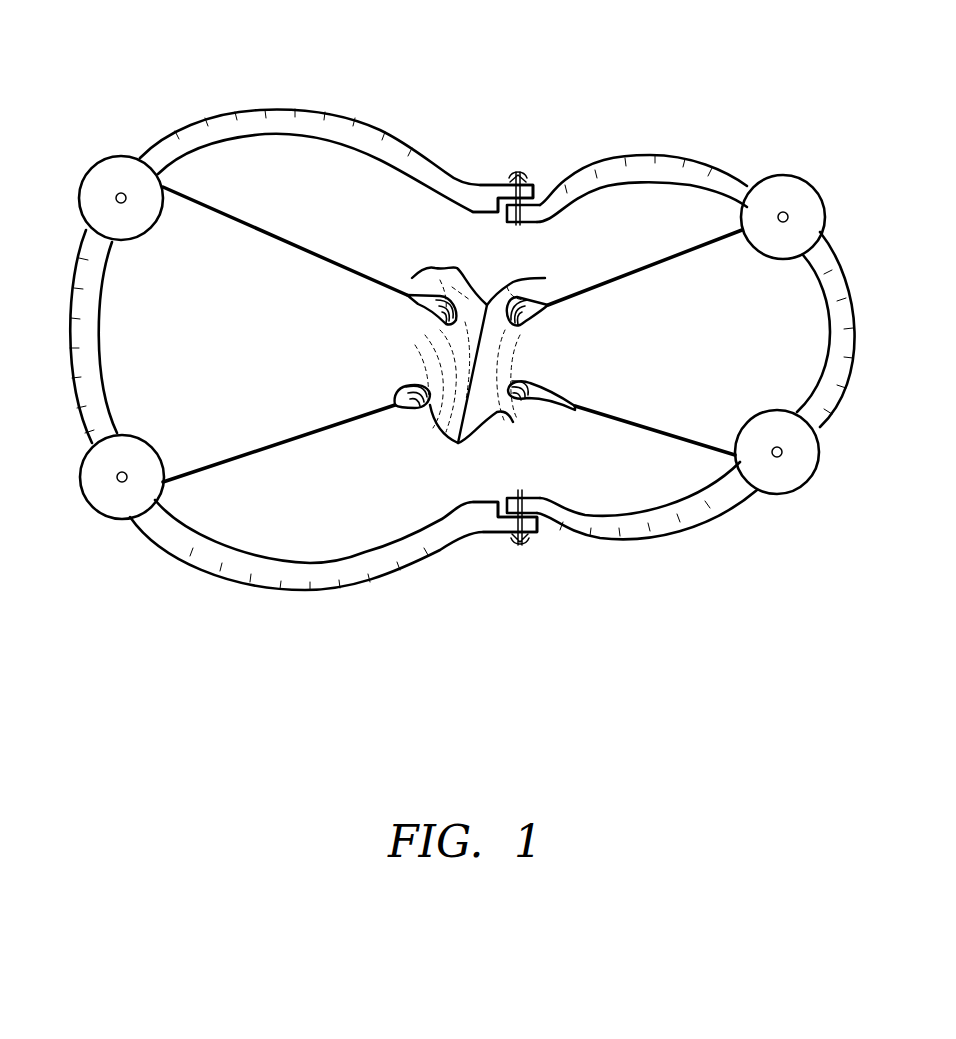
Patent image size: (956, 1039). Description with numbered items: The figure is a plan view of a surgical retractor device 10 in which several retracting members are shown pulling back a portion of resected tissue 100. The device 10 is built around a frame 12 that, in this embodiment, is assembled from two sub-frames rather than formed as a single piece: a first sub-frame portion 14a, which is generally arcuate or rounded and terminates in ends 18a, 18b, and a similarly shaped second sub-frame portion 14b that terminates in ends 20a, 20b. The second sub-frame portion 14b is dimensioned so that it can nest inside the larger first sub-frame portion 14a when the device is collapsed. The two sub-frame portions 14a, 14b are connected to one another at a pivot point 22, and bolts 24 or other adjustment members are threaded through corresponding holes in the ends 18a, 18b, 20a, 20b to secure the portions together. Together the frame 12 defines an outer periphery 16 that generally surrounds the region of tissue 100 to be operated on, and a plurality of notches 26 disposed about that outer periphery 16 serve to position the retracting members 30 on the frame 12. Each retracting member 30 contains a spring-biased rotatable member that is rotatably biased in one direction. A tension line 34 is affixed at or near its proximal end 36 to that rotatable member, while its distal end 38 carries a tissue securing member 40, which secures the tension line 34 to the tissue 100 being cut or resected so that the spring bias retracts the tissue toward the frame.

The surgical retractor device 10 is at (634, 77).
The frame 12 is at (336, 121).
The first sub-frame portion 14a is at (267, 109).
The second sub-frame portion 14b is at (695, 158).
The outer periphery 16 is at (407, 574).
The end of first sub-frame portion 18a is at (508, 167).
The end of first sub-frame portion 18b is at (500, 542).
The end of second sub-frame portion 20a is at (523, 226).
The end of second sub-frame portion 20b is at (568, 485).
The pivot point 22 is at (558, 556).
The bolt 24 is at (520, 170).
The notches 26 is at (192, 556).
The retracting member 30 is at (98, 170).
The tension line 34 is at (290, 243).
The proximal end of tension line 36 is at (166, 197).
The distal end of tension line 38 is at (407, 297).
The tissue securing member 40 is at (432, 298).
The tissue 100 is at (425, 444).